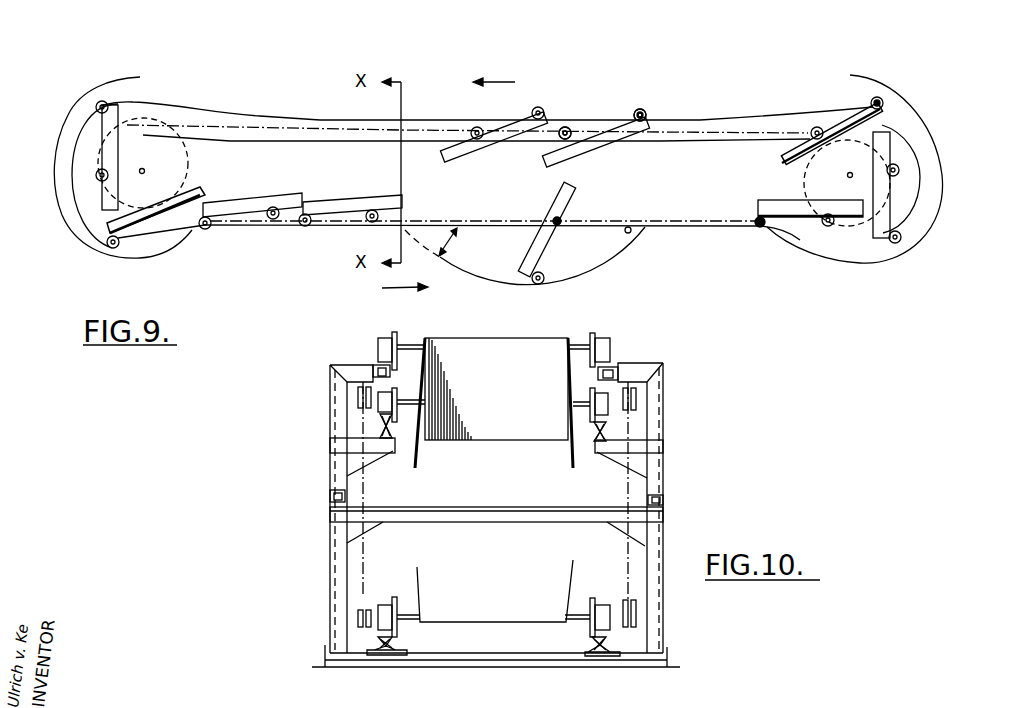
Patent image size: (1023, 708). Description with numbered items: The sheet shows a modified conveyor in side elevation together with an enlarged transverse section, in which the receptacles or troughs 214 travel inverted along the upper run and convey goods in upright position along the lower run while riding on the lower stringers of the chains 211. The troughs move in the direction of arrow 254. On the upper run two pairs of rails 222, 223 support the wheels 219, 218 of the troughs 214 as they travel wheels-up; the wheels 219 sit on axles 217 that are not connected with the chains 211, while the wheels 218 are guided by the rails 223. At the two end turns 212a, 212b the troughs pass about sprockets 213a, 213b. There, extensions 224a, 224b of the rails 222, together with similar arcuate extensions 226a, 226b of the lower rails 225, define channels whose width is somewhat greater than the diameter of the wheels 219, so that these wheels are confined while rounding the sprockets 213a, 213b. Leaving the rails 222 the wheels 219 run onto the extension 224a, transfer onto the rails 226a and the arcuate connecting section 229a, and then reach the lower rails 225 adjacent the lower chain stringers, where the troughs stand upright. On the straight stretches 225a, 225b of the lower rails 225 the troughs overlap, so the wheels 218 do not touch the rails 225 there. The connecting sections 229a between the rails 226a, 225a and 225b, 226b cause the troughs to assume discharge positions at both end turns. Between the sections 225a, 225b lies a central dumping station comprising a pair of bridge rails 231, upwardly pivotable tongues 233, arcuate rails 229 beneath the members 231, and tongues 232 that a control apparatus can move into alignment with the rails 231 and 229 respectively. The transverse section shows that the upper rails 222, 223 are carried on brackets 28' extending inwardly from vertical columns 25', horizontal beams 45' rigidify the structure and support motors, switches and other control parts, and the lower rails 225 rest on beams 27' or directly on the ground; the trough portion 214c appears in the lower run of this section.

In FIG. 9, the chains 211 is at (732, 132).
In FIG. 10, the chains 211 is at (632, 578).
In FIG. 9, the end turn 212a is at (143, 163).
In FIG. 9, the end turn 212b is at (847, 183).
In FIG. 9, the sprocket 213a is at (96, 174).
In FIG. 9, the sprocket 213b is at (897, 187).
In FIG. 9, the troughs 214 is at (242, 203).
In FIG. 10, the troughs 214 is at (540, 437).
In FIG. 9, the pivoting support bar 214c is at (540, 252).
In FIG. 10, the pivoting support bar 214c is at (420, 573).
In FIG. 9, the axles 217 is at (640, 110).
In FIG. 10, the axles 217 is at (408, 344).
In FIG. 9, the wheels 218 is at (568, 128).
In FIG. 10, the wheels 218 is at (380, 412).
In FIG. 9, the wheels 219 is at (645, 112).
In FIG. 10, the wheels 219 is at (596, 337).
In FIG. 9, the rails 222 is at (307, 118).
In FIG. 10, the rails 222 is at (612, 367).
In FIG. 9, the rails 223 is at (315, 140).
In FIG. 10, the rails 223 is at (598, 433).
In FIG. 9, the rail extension 224a is at (80, 138).
In FIG. 9, the rail extension 224b is at (920, 167).
In FIG. 9, the lower rails 225 is at (671, 241).
In FIG. 10, the lower rails 225 is at (392, 645).
In FIG. 9, the rail section 225a is at (340, 230).
In FIG. 9, the rail section 225b is at (722, 229).
In FIG. 9, the arcuate rail extension 226a is at (78, 217).
In FIG. 9, the arcuate rail extension 226b is at (923, 228).
In FIG. 9, the arcuate rails 229 is at (608, 268).
In FIG. 9, the arcuate connecting rail section 229a is at (180, 243).
In FIG. 9, the bridge rails 231 is at (493, 228).
In FIG. 9, the tongues 232 is at (430, 225).
In FIG. 9, the pivotable tongues 233 is at (642, 227).
In FIG. 9, the arrow 254 is at (388, 290).
In FIG. 10, the brackets 28' is at (516, 480).
In FIG. 10, the horizontal beams 45' is at (473, 504).
In FIG. 10, the vertical columns 25' is at (474, 508).
In FIG. 10, the beams 27' is at (496, 645).